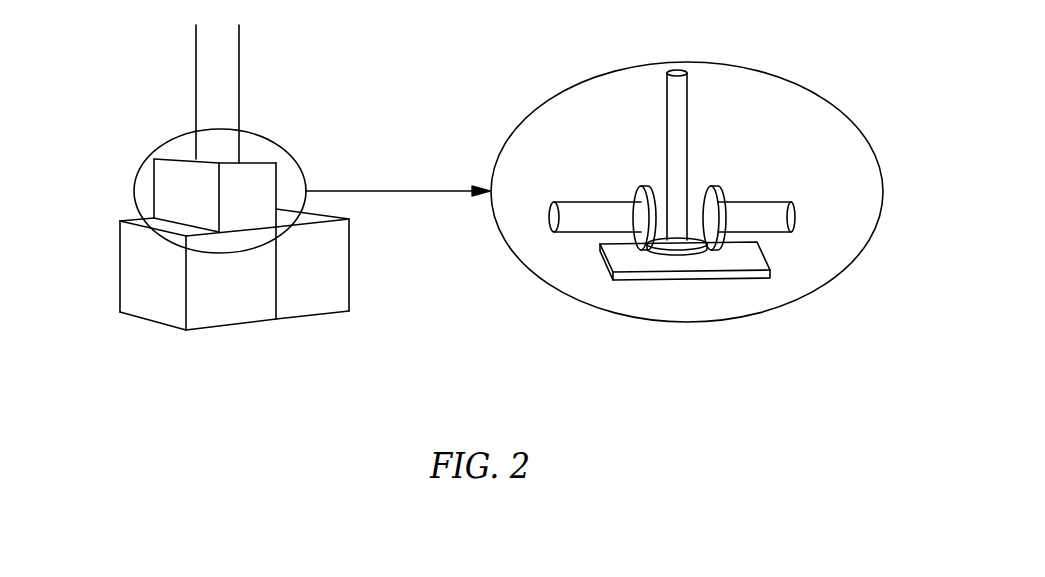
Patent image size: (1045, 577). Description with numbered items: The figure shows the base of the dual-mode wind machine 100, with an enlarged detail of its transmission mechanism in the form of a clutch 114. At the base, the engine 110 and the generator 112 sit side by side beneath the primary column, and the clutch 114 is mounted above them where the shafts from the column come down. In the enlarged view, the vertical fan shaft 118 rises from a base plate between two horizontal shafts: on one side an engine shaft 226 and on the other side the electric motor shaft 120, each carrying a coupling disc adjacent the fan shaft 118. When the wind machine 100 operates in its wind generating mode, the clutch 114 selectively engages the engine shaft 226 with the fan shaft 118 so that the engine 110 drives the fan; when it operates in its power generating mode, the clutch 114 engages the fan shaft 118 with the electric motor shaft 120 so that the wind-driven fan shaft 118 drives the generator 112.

The wind machine 100 is at (196, 92).
The clutch 114 is at (154, 188).
The engine 110 is at (150, 283).
The generator 112 is at (315, 285).
The fan shaft 118 is at (586, 60).
The electric motor shaft 120 is at (790, 218).
The engine shaft 226 is at (580, 227).